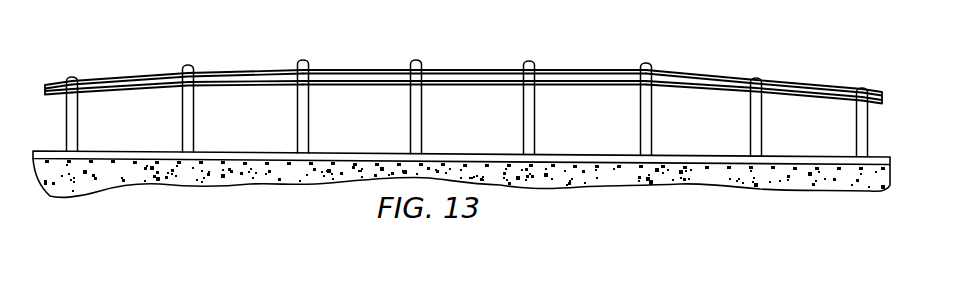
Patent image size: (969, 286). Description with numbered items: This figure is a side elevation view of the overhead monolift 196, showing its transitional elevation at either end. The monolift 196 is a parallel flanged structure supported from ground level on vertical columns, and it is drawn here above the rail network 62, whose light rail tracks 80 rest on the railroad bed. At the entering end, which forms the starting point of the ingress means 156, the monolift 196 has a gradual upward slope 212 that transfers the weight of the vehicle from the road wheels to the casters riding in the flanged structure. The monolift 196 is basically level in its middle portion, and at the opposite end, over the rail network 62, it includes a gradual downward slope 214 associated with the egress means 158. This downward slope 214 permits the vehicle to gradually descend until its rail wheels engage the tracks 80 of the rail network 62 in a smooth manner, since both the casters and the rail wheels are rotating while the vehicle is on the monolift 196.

The ingress means 156 is at (47, 84).
The egress means 158 is at (879, 90).
The overhead monolift 196 is at (458, 68).
The gradual upward slope 212 is at (238, 71).
The gradual downward slope 214 is at (723, 78).
The light rail tracks 80 is at (290, 161).
The rail network 62 is at (674, 166).